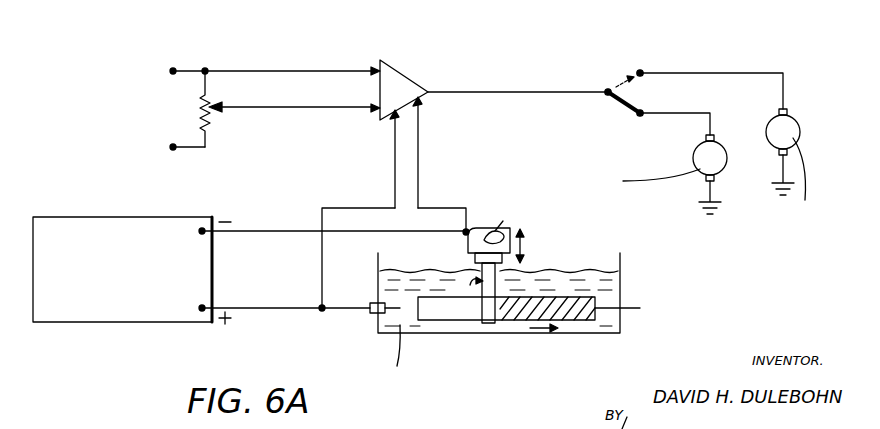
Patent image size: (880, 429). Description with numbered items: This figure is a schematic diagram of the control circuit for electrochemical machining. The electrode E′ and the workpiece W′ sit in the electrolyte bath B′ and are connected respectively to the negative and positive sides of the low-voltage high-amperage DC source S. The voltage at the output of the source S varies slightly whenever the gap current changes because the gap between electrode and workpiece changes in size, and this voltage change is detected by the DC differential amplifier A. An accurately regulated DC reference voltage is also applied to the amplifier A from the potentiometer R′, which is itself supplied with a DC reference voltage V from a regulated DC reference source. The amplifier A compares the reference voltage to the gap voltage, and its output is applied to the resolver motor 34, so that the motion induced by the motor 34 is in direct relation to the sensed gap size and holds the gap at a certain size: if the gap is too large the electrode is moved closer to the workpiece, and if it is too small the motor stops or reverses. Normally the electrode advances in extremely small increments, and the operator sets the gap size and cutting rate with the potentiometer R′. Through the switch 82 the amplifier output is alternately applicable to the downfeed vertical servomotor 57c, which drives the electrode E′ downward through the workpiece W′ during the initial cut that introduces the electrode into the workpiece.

The D.C. reference source voltage terminal V is at (167, 90).
The potentiometer R′ is at (216, 118).
The DC differential amplifier A is at (416, 84).
The low-voltage high-amperage DC source S is at (95, 230).
The electrode E′ is at (480, 227).
The switch 82 is at (606, 97).
The resolver motor 34 is at (718, 172).
The downfeed vertical servomotor 57c is at (797, 124).
The workpiece W′ is at (597, 297).
The electrolyte bath B′ is at (622, 328).